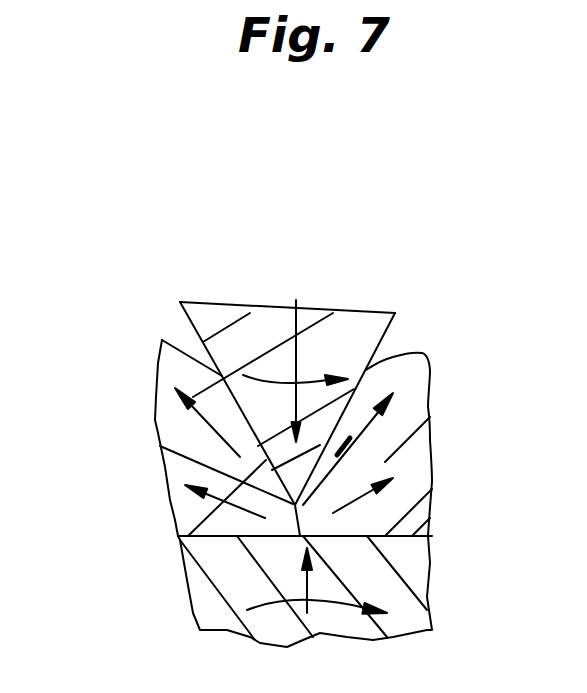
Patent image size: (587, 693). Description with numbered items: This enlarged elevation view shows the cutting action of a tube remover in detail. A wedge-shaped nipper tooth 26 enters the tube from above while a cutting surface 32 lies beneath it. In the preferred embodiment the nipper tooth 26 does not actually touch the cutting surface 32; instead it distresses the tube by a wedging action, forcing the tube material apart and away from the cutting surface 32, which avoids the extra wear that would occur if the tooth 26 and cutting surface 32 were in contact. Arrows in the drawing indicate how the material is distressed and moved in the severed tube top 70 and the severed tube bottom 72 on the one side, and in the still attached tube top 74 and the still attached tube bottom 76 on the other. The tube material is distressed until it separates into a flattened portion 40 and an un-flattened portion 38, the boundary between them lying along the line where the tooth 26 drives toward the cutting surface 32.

The nipper tooth 26 is at (296, 332).
The severed tube top 70 is at (363, 390).
The severed tube bottom 72 is at (363, 470).
The still attached tube top 74 is at (222, 397).
The still attached tube bottom 76 is at (175, 491).
The un-flattened portion 38 is at (172, 522).
The flattened portion 40 is at (434, 506).
The cutting surface 32 is at (334, 540).